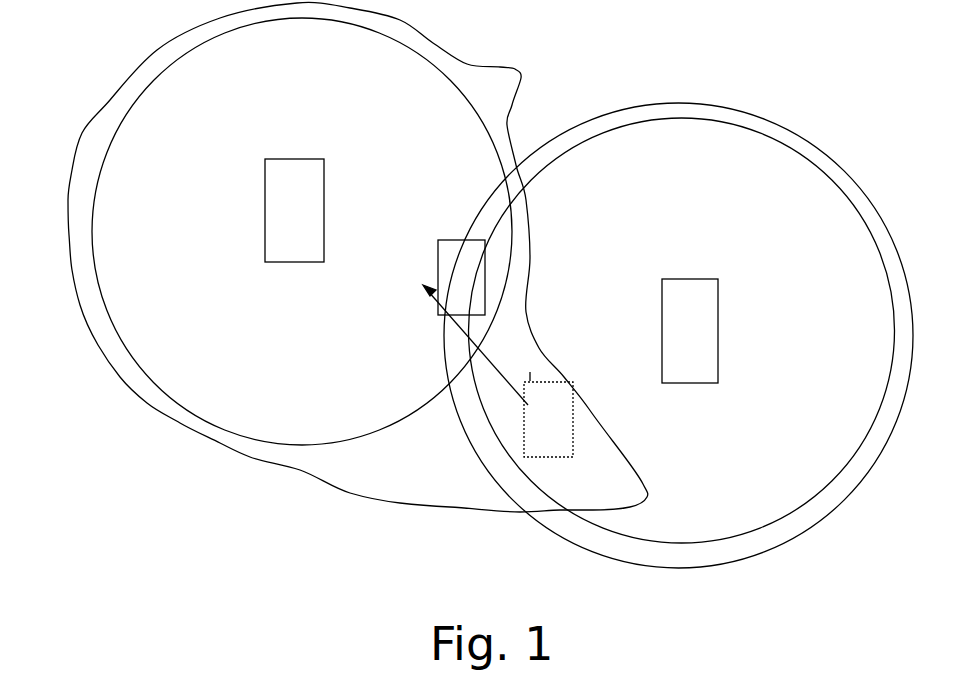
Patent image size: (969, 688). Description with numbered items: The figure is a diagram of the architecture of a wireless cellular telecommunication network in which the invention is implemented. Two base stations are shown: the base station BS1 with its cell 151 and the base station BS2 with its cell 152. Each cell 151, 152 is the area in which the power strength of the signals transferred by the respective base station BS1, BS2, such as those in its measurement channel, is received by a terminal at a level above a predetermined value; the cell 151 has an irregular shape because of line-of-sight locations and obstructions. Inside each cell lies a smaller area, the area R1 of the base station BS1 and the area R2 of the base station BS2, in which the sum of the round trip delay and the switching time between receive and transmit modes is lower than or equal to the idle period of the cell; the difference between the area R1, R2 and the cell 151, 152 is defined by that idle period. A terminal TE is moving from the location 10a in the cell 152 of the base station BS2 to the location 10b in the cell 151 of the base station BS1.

The cell of base station BS1 151 is at (73, 172).
The cell of base station BS2 152 is at (798, 537).
The area of the base station BS1 R1 is at (151, 88).
The area of the base station BS2 R2 is at (677, 118).
The base station BS1 is at (294, 210).
The base station BS2 is at (690, 331).
The location of the terminal 10a is at (556, 383).
The location of the terminal 10b is at (444, 241).